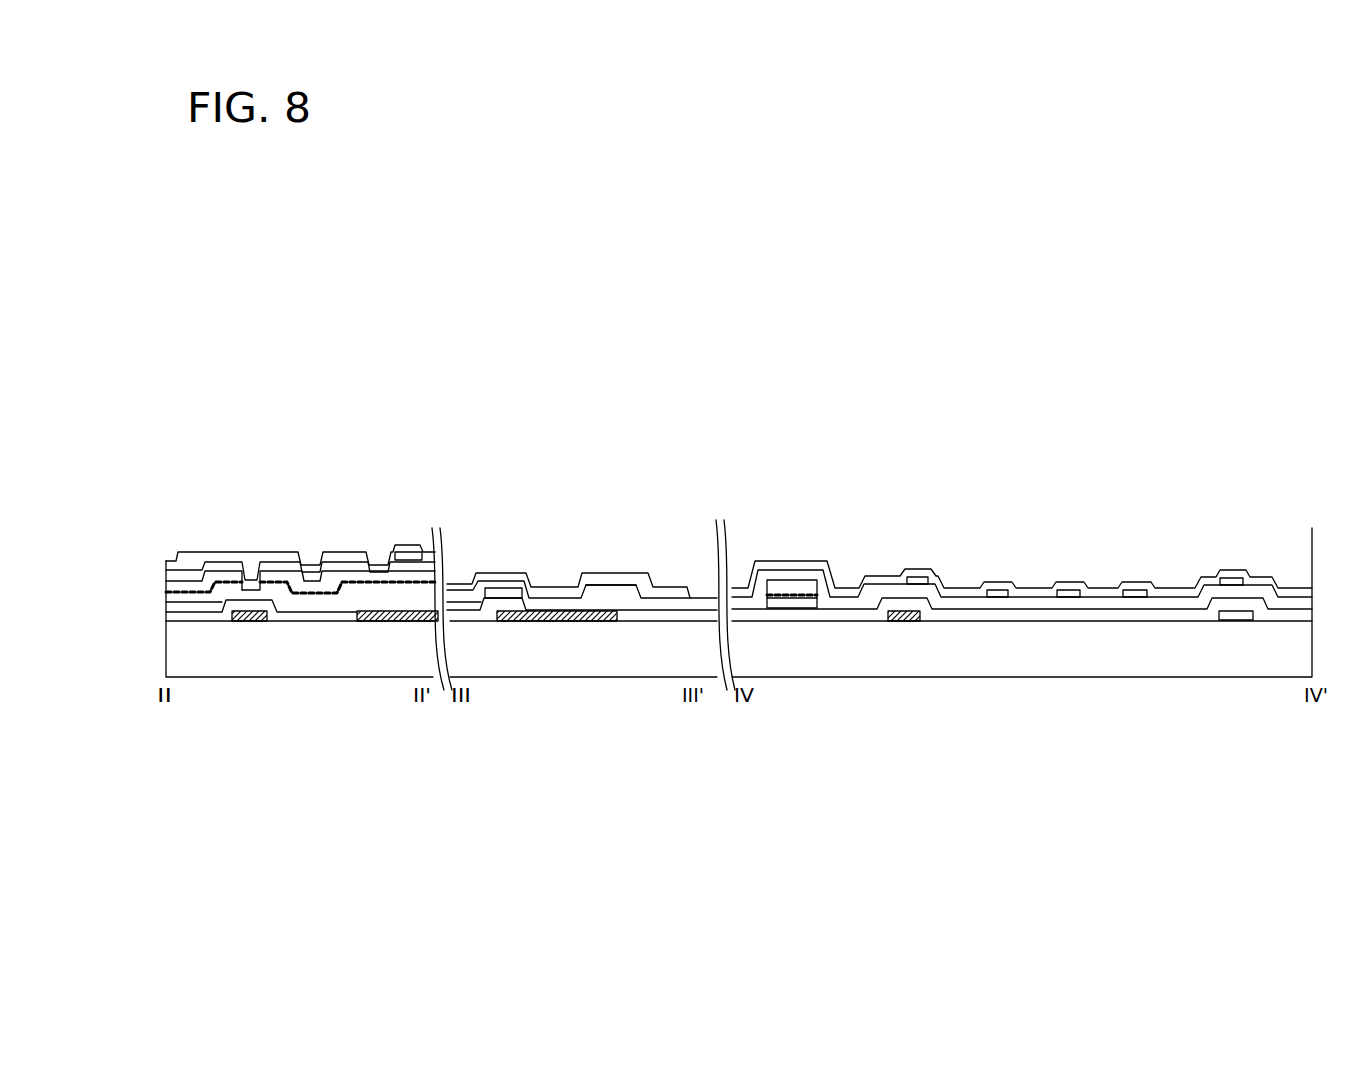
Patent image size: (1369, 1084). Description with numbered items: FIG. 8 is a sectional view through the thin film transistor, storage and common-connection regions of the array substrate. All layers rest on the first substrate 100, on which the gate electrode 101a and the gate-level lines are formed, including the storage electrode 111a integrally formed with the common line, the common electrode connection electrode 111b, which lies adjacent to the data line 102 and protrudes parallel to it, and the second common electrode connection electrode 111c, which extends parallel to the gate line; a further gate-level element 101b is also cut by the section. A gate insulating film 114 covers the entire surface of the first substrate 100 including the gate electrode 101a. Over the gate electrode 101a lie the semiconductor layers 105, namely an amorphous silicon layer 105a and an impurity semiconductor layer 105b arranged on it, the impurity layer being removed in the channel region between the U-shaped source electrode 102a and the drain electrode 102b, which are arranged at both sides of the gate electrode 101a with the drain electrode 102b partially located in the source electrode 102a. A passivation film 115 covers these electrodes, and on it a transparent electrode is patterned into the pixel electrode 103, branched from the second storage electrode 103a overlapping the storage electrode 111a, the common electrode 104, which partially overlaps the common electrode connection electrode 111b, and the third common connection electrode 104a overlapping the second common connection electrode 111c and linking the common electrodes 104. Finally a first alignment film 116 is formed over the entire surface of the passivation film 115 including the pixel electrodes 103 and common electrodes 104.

The first substrate 100 is at (170, 669).
The gate electrode 101a is at (250, 617).
The gate pad 101b is at (911, 617).
The data line 102 is at (775, 585).
The source electrode 102a is at (190, 588).
The drain electrode 102b is at (283, 596).
The pixel electrode 103 is at (1002, 590).
The second storage electrode 103a is at (423, 556).
The common electrode 104 is at (917, 581).
The third common connection electrode 104a is at (608, 585).
The semiconductor layers 105 is at (451, 670).
The amorphous silicon layer 105a is at (166, 603).
The impurity semiconductor layer 105b is at (166, 586).
The storage electrode 111a is at (393, 617).
The common electrode connection electrode 111b is at (1238, 613).
The second common electrode connection electrode 111c is at (578, 617).
The gate insulating film 114 is at (166, 623).
The passivation film 115 is at (242, 566).
The first alignment film 116 is at (350, 552).